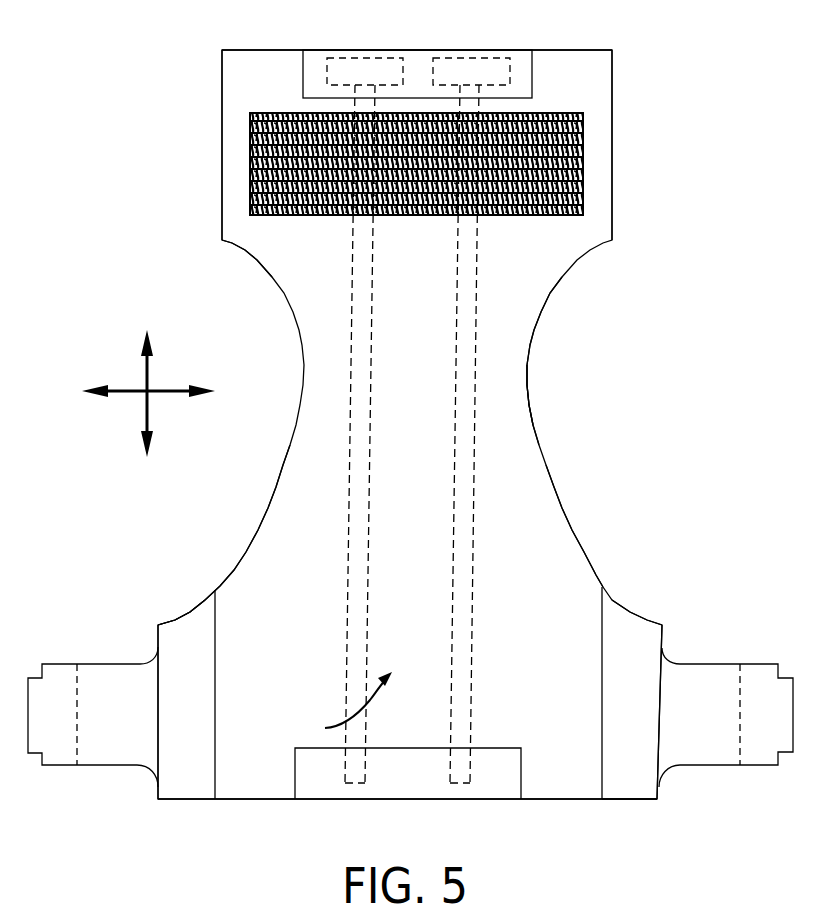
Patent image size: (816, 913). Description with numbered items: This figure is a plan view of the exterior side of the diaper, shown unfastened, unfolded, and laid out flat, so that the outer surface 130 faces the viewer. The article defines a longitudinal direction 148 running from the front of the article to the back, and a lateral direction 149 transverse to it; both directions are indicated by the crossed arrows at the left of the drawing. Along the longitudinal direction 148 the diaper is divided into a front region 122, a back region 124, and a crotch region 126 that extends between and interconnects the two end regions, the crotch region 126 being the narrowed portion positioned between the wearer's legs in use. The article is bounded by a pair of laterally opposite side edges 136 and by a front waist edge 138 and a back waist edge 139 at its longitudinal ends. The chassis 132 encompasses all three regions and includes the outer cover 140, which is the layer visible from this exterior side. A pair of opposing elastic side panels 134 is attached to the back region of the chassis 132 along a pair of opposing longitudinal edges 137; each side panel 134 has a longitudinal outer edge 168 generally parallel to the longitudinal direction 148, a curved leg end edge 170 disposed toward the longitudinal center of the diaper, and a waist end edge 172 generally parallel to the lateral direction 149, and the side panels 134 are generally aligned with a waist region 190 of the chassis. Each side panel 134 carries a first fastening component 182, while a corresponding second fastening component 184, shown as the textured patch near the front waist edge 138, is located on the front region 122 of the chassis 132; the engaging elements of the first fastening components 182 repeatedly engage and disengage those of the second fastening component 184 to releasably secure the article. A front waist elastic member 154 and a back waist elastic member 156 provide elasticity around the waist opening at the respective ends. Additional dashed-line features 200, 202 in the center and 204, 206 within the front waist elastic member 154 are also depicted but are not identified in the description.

The front region 122 is at (508, 272).
The back region 124 is at (548, 540).
The crotch region 126 is at (510, 385).
The outer surface 130 is at (431, 363).
The chassis 132 is at (293, 505).
The elastic side panels 134 is at (600, 67).
The side edges 136 is at (287, 447).
The longitudinal edges 137 is at (215, 688).
The front waist edge 138 is at (268, 50).
The back waist edge 139 is at (285, 800).
The outer cover 140 is at (253, 588).
The longitudinal direction 148 is at (149, 360).
The lateral direction 149 is at (160, 394).
The front waist elastic member 154 is at (533, 85).
The back waist elastic member 156 is at (373, 748).
The longitudinal outer edge 168 is at (158, 705).
The leg end edge 170 is at (190, 635).
The waist end edges 172 is at (610, 800).
The first fastening components 182 is at (58, 768).
The second fastening component 184 is at (455, 214).
The waist region 190 is at (337, 705).
The first channel 200 is at (370, 498).
The second channel 202 is at (480, 600).
The first landing zone portion 204 is at (367, 58).
The second landing zone portion 206 is at (474, 58).